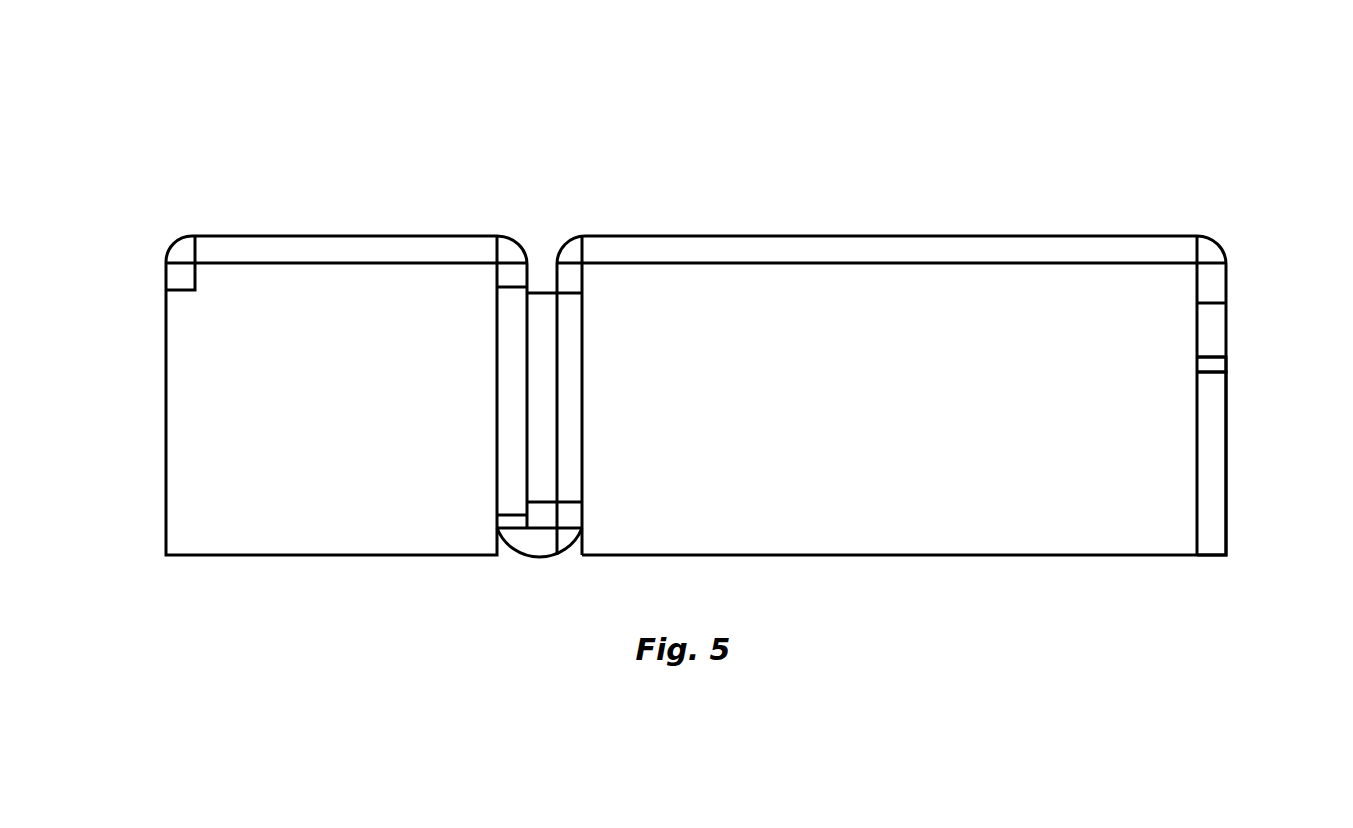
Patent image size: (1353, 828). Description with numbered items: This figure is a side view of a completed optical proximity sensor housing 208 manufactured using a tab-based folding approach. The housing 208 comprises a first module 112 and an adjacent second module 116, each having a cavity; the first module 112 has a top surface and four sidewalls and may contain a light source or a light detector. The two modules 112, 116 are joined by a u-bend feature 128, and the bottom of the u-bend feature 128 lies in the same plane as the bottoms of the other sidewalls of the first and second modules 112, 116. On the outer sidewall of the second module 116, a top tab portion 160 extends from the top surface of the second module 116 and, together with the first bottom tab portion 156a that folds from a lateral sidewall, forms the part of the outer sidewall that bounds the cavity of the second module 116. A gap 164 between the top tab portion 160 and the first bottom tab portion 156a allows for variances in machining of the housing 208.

The housing 208 is at (708, 373).
The first module 112 is at (346, 340).
The second module 116 is at (949, 343).
The u-bend feature 128 is at (527, 482).
The top tab portion 160 is at (1269, 286).
The gap 164 is at (1260, 337).
The first bottom tab portion 156a is at (1264, 463).